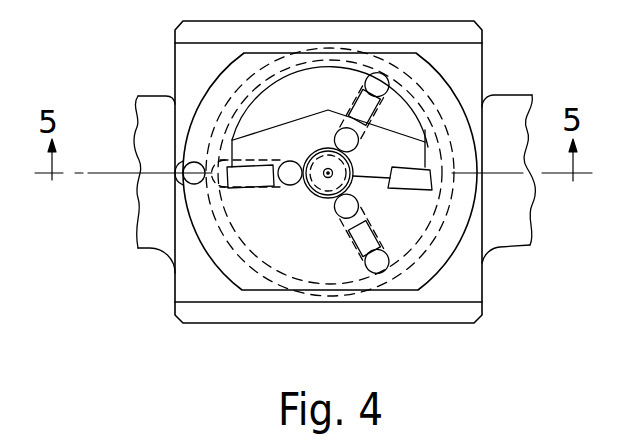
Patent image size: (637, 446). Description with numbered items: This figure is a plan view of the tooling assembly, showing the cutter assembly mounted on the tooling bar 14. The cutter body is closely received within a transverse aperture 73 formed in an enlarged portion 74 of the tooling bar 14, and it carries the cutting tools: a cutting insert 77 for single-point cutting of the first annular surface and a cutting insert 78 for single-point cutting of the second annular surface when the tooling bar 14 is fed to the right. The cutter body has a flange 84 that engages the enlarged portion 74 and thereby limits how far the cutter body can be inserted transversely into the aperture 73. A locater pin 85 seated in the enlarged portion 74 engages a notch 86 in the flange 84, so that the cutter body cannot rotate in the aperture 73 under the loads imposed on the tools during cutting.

The tooling bar 14 is at (156, 95).
The transverse aperture 73 is at (420, 116).
The enlarged portion 74 is at (182, 60).
The cutting insert 77 is at (250, 180).
The cutting insert 78 is at (423, 190).
The flange 84 is at (418, 278).
The locater pin 85 is at (183, 178).
The notch 86 is at (183, 170).